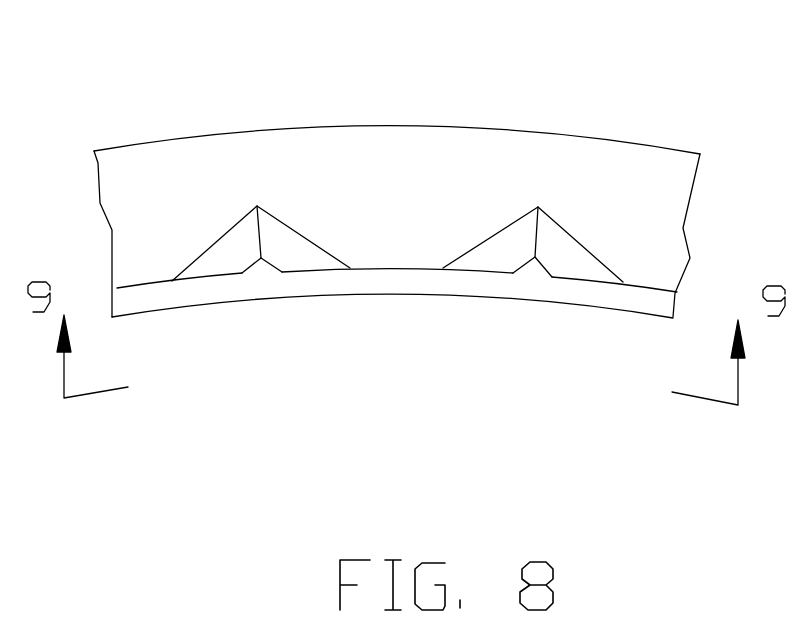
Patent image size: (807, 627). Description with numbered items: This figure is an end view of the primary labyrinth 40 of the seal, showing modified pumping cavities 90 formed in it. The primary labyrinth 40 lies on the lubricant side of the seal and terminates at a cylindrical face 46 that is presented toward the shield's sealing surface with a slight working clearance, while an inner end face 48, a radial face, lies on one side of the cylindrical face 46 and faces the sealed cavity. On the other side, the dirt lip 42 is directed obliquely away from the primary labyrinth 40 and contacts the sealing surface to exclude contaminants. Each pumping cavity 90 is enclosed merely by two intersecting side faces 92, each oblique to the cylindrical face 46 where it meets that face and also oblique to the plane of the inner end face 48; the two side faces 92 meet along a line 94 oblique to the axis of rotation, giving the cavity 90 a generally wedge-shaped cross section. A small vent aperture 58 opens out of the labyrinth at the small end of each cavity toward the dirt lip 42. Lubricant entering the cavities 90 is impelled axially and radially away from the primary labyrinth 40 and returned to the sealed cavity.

The primary labyrinth 40 is at (178, 166).
The dirt lip 42 is at (632, 302).
The cylindrical face 46 is at (400, 270).
The inner end face 48 is at (487, 157).
The vent aperture 58 is at (257, 273).
The pumping cavity 90 is at (285, 242).
The side face 92 is at (213, 262).
The line 94 is at (258, 233).